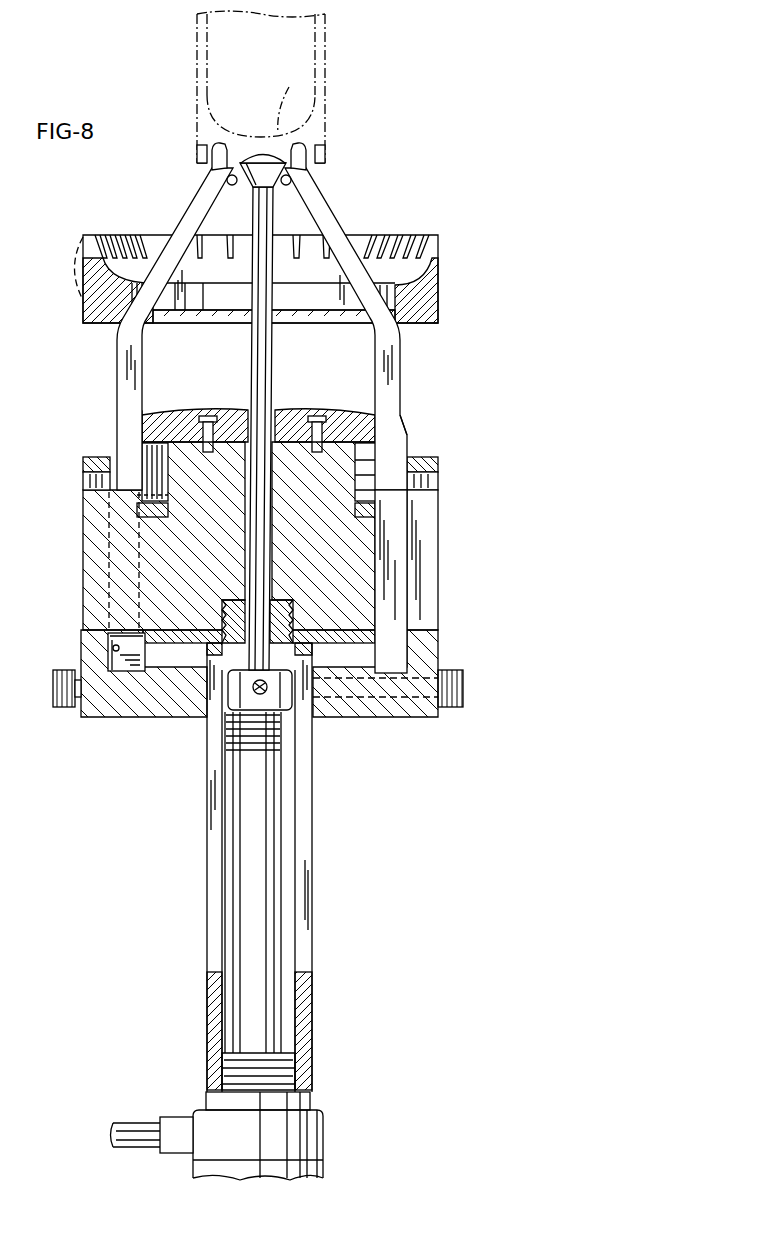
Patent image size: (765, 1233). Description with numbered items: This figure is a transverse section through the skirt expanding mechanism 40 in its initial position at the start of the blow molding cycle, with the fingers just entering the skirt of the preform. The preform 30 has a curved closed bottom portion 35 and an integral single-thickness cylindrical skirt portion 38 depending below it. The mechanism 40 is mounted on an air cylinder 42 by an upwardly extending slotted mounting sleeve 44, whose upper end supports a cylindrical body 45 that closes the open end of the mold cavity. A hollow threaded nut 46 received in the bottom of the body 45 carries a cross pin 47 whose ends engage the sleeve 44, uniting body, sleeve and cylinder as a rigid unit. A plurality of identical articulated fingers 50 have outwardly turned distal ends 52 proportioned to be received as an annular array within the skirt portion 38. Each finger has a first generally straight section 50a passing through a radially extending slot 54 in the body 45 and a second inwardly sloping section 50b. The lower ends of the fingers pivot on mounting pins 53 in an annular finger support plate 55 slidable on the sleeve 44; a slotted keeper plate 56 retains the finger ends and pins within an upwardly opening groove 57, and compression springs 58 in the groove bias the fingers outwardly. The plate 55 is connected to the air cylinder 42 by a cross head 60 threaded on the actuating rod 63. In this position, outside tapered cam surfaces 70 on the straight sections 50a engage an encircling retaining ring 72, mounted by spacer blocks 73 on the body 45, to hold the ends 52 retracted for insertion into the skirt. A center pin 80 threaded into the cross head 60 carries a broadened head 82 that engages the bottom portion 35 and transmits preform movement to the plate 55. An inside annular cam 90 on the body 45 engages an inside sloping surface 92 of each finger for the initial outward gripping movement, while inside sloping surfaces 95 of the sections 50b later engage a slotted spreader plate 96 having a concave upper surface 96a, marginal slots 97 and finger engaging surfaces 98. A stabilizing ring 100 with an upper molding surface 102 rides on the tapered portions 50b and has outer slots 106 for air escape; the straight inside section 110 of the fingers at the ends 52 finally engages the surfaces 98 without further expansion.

The preform 30 is at (325, 48).
The closed bottom portion 35 is at (283, 97).
The skirt portion 38 is at (327, 152).
The expanding mechanism 40 is at (256, 690).
The air cylinder 42 is at (200, 1168).
The slotted mounting sleeve 44 is at (312, 858).
The cylindrical body 45 is at (262, 531).
The hollow threaded nut 46 is at (235, 600).
The cross pin 47 is at (295, 622).
The articulated fingers 50 is at (252, 316).
The first generally straight section 50a is at (397, 560).
The second inwardly sloping section 50b is at (335, 232).
The outwardly turned distal ends 52 is at (203, 155).
The mounting pins 53 is at (397, 644).
The radially extending slots 54 is at (430, 510).
The finger support plate 55 is at (160, 700).
The keeper plate 56 is at (173, 630).
The groove 57 is at (108, 662).
The compression springs 58 is at (383, 700).
The cross head 60 is at (250, 705).
The actuating rod 63 is at (253, 873).
The outside tapered cam surfaces 70 is at (410, 428).
The outside retaining ring 72 is at (88, 457).
The spacer blocks 73 is at (84, 481).
The center pin 80 is at (252, 342).
The broadened head 82 is at (252, 153).
The inside annular cam 90 is at (137, 497).
The inside sloping surface 92 is at (167, 494).
The inside sloping surfaces 95 is at (337, 270).
The spreader plate 96 is at (258, 395).
The concave upper surface 96a is at (231, 392).
The marginal slots 97 is at (147, 412).
The finger engaging surfaces 98 is at (145, 428).
The stabilizing ring 100 is at (298, 256).
The upper molding surface 102 is at (400, 233).
The slots 106 is at (146, 238).
The straight inside section 110 is at (220, 180).